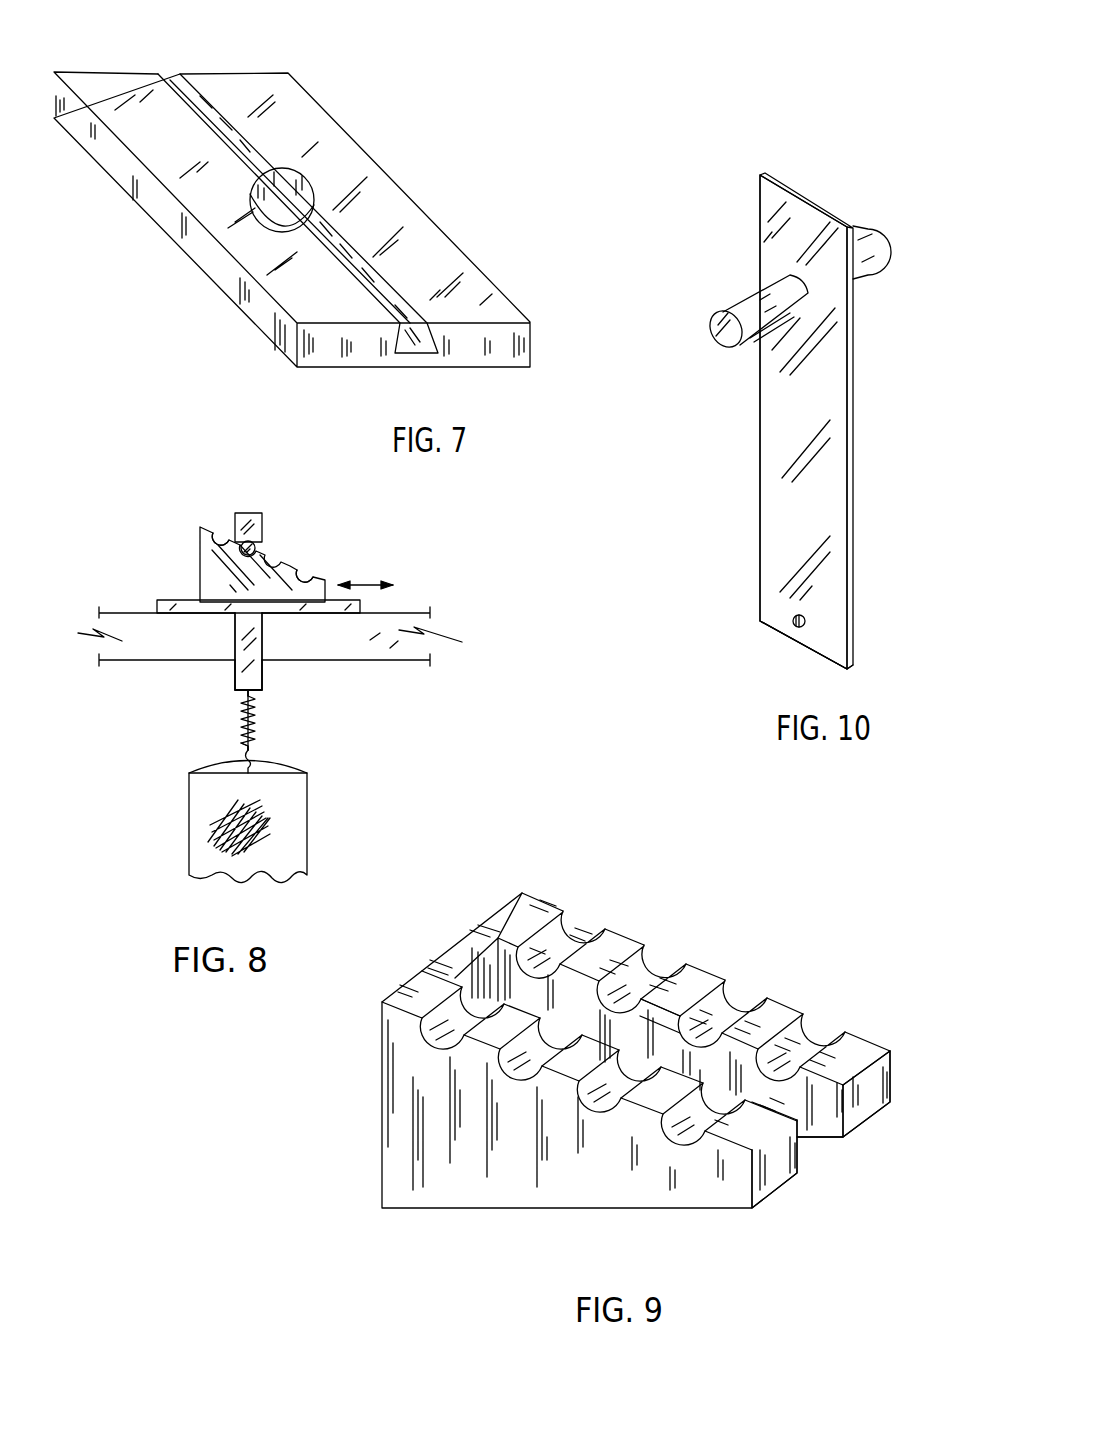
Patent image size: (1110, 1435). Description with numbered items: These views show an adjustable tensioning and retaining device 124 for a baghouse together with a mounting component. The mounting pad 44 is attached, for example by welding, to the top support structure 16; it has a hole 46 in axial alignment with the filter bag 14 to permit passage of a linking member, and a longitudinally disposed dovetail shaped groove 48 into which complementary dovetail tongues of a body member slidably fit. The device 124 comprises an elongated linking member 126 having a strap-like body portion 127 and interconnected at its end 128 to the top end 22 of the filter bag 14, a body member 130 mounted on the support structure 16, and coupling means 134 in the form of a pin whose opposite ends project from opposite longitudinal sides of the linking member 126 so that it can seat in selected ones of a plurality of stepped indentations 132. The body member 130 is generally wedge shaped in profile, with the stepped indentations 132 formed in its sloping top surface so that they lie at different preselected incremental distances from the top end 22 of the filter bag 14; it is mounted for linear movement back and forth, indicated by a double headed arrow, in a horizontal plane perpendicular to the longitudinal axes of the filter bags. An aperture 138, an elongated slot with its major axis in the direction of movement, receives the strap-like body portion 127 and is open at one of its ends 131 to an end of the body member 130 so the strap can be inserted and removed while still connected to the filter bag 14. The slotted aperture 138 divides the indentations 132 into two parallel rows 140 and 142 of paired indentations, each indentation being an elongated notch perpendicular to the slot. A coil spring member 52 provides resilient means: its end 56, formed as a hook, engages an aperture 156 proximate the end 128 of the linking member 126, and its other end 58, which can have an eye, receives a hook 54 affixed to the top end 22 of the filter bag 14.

In FIG. 8, the filter bag 14 is at (287, 837).
In FIG. 8, the top support structure 16 is at (378, 625).
In FIG. 8, the top end of the filter bag 22 is at (291, 769).
In FIG. 7, the mounting pad 44 is at (408, 150).
In FIG. 8, the mounting pad 44 is at (164, 600).
In FIG. 7, the hole 46 is at (273, 222).
In FIG. 7, the dovetail shaped groove 48 is at (178, 72).
In FIG. 8, the coil spring member 52 is at (235, 723).
In FIG. 8, the hook 54 is at (257, 737).
In FIG. 8, the end of the coil spring member 56 is at (243, 694).
In FIG. 8, the other end of the coil spring member 58 is at (237, 750).
In FIG. 8, the adjustable tensioning and retaining device 124 is at (118, 710).
In FIG. 8, the elongated linking member 126 is at (316, 679).
In FIG. 10, the elongated linking member 126 is at (743, 481).
In FIG. 8, the strap-like body portion 127 is at (232, 675).
In FIG. 10, the strap-like body portion 127 is at (823, 471).
In FIG. 8, the end of the linking member 128 is at (266, 687).
In FIG. 10, the end of the linking member 128 is at (791, 647).
In FIG. 8, the body member 130 is at (187, 557).
In FIG. 9, the body member 130 is at (355, 1158).
In FIG. 9, the open end of the slotted aperture 131 is at (810, 1150).
In FIG. 8, the stepped indentations 132 is at (216, 533).
In FIG. 9, the stepped indentations 132 is at (572, 928).
In FIG. 8, the coupling means 134 is at (255, 546).
In FIG. 10, the coupling means 134 is at (724, 307).
In FIG. 9, the aperture 138 is at (677, 1053).
In FIG. 9, the row of indentations 140 is at (900, 1088).
In FIG. 9, the row of indentations 142 is at (780, 1197).
In FIG. 10, the aperture 156 is at (791, 621).